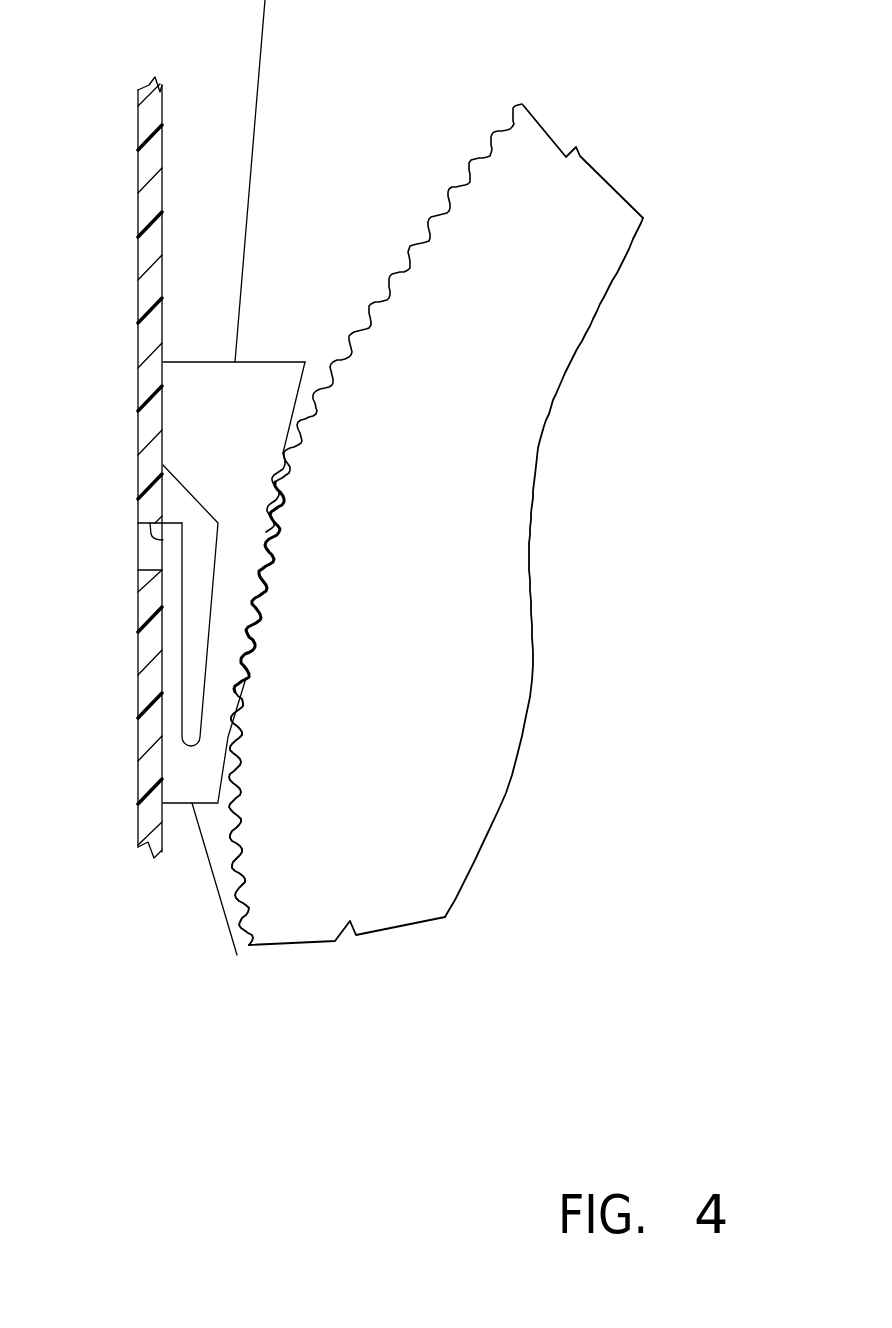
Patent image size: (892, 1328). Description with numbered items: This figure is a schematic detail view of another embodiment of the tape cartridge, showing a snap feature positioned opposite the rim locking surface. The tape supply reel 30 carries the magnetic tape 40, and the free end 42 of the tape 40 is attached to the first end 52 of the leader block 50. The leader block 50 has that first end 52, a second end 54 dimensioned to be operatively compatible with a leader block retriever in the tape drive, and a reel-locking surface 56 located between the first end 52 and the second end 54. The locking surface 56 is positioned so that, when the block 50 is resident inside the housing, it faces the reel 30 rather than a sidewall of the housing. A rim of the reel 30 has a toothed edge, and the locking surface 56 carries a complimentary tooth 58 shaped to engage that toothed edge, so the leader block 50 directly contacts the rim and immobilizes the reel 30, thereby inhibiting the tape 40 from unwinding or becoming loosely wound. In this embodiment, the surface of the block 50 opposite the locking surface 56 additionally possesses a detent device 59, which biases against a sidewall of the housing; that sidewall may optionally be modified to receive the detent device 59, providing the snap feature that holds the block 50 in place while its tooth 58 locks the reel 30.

The tape supply reel 30 is at (480, 170).
The magnetic tape 40 is at (262, 80).
The free end of tape 42 is at (226, 911).
The leader block 50 is at (300, 368).
The first end of leader block 52 is at (190, 805).
The second end of leader block 54 is at (233, 362).
The reel-locking surface 56 is at (258, 593).
The complimentary tooth 58 is at (290, 470).
The detent device 59 is at (150, 525).